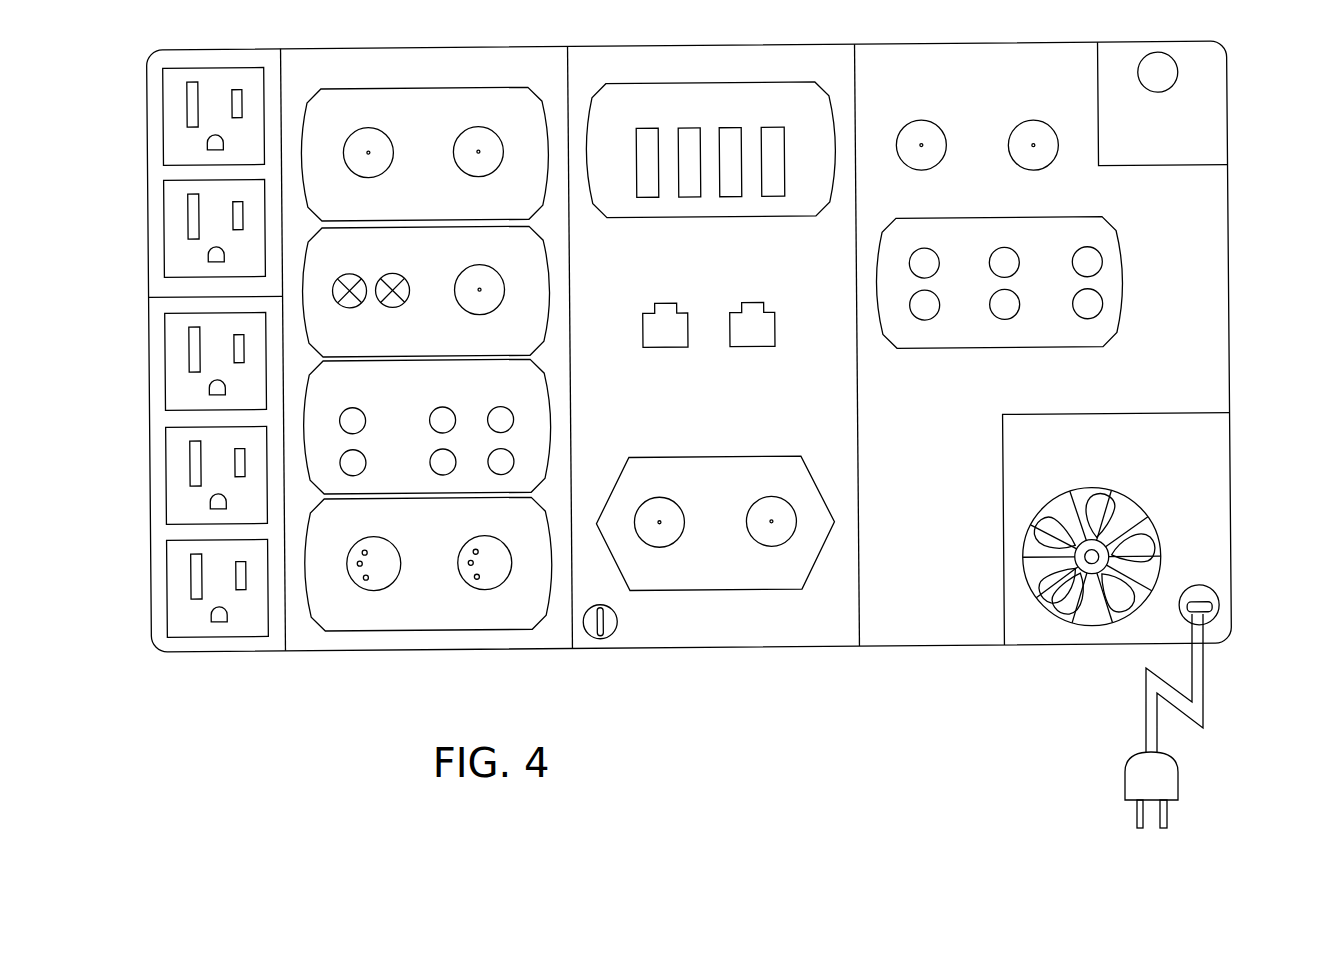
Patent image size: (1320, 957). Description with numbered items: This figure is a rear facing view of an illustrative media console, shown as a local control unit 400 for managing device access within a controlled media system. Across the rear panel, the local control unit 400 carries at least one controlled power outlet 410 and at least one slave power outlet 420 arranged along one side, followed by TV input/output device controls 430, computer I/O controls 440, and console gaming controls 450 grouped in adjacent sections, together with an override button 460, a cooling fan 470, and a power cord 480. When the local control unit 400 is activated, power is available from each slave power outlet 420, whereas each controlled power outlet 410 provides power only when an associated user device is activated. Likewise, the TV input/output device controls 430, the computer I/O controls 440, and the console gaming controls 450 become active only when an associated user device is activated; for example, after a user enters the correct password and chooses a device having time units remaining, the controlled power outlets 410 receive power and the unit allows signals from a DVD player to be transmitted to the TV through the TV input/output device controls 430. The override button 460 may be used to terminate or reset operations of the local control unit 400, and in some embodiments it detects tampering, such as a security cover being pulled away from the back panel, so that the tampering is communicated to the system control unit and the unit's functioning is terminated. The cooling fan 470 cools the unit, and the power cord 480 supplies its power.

The local control unit 400 is at (232, 697).
The controlled power outlet 410 is at (157, 115).
The slave power outlet 420 is at (159, 458).
The TV input/output device controls 430 is at (490, 68).
The computer I/O controls 440 is at (688, 68).
The console gaming controls 450 is at (980, 67).
The override button 460 is at (1208, 80).
The cooling fan 470 is at (1159, 541).
The power cord 480 is at (1178, 785).